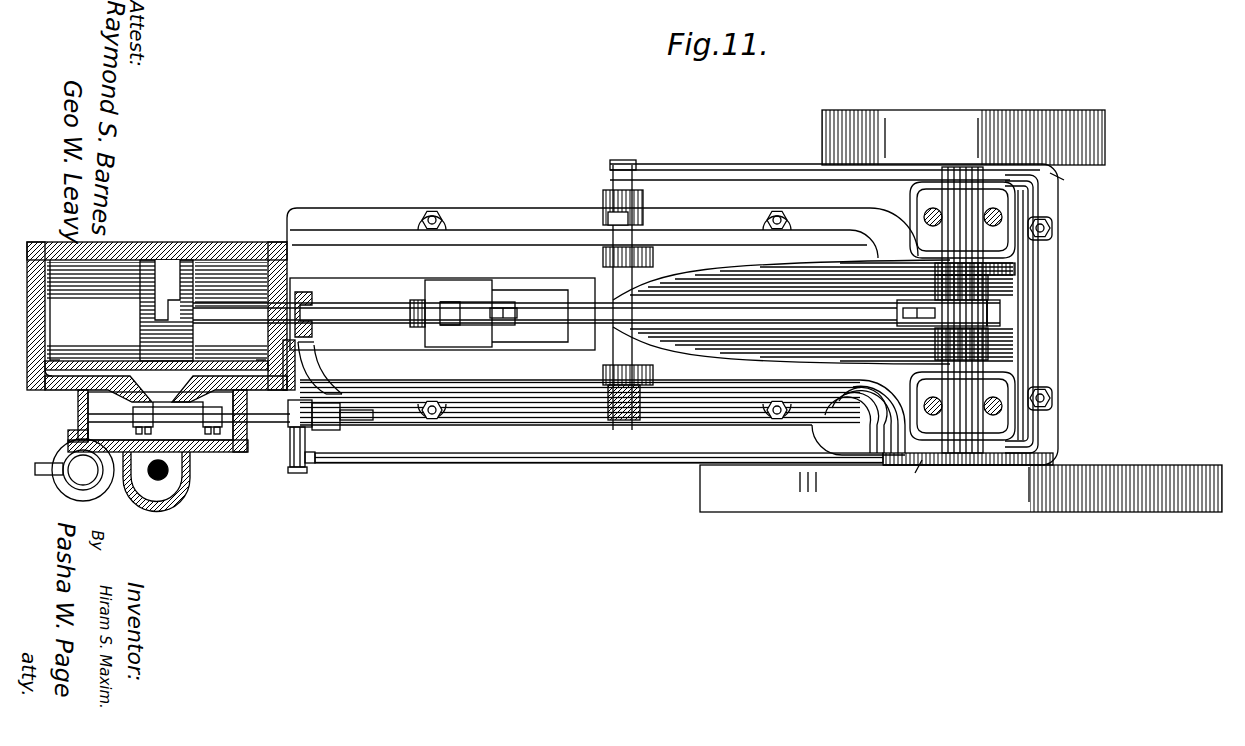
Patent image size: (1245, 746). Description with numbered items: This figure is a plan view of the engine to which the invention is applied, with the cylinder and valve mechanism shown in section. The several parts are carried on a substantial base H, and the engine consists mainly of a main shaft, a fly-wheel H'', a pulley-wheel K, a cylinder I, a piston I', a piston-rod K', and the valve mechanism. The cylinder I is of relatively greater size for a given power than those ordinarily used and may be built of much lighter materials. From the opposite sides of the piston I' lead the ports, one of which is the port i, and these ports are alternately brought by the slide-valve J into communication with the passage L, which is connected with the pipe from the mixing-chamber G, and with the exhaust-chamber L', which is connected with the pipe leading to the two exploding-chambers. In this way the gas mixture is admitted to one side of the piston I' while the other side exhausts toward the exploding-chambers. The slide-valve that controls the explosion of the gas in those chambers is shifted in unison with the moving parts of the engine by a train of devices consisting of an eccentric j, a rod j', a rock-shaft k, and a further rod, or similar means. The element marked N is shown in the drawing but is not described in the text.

The cylinder I is at (157, 316).
The piston I' is at (570, 310).
The port i is at (158, 352).
The exhaust-chamber L' is at (166, 386).
The passage L is at (158, 451).
The slide-valve J is at (189, 422).
The mixing-chamber G is at (74, 481).
The pulley-wheel K is at (696, 184).
The piston-rod K' is at (442, 314).
The base H is at (602, 405).
The rock-shaft k is at (808, 295).
The rod j' is at (825, 161).
The eccentric j is at (841, 314).
The rod N is at (618, 472).
The fly-wheel H'' is at (961, 488).